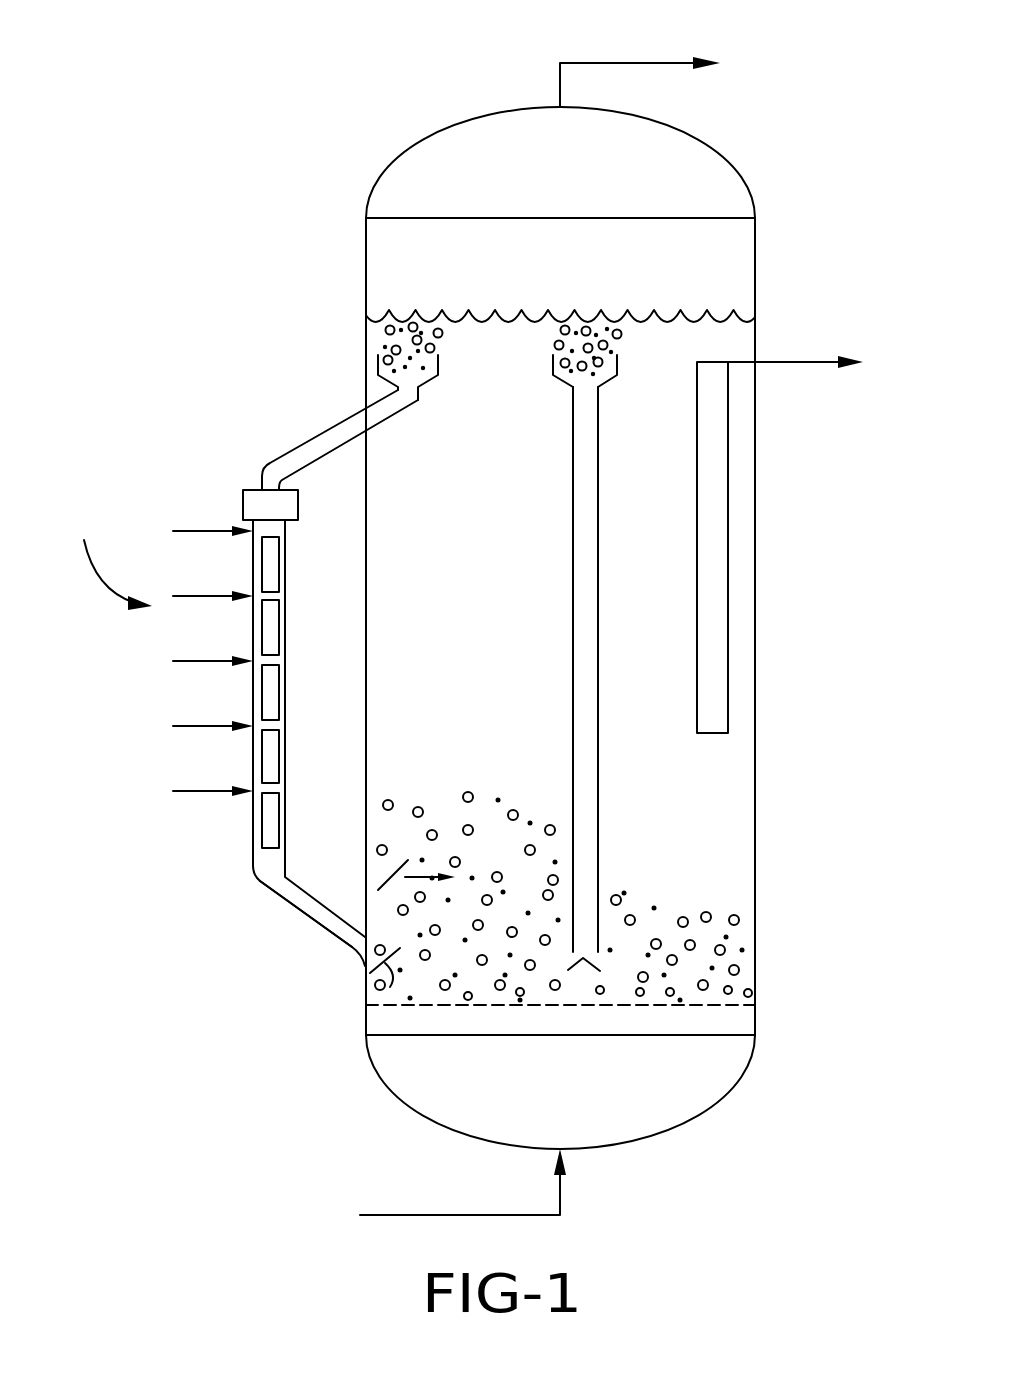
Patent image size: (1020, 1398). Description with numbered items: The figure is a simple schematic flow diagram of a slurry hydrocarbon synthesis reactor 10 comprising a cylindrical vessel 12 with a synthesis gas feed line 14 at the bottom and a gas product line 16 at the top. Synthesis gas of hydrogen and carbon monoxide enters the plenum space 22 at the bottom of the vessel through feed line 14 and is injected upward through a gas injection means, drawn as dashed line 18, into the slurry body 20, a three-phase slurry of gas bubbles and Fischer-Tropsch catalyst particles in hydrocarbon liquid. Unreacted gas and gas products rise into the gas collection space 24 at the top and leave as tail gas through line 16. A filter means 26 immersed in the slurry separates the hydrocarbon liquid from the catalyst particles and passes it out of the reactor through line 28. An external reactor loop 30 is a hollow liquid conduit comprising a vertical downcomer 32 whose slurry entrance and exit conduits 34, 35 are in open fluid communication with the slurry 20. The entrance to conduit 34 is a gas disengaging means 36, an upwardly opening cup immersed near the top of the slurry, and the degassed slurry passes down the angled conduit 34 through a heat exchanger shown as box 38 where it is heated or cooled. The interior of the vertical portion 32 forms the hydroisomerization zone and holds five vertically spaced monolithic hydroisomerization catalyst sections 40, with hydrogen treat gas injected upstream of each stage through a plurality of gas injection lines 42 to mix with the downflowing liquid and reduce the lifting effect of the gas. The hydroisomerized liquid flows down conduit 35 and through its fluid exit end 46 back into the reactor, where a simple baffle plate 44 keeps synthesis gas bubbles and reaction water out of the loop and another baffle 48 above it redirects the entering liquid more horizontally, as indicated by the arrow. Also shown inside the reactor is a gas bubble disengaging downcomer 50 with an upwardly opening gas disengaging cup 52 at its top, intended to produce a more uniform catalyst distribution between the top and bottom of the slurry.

The slurry hydrocarbon synthesis reactor 10 is at (288, 100).
The cylindrical vessel 12 is at (755, 275).
The synthesis gas feed line 14 is at (483, 1215).
The gas product line 16 is at (612, 63).
The gas injection means 18 is at (723, 1005).
The slurry body 20 is at (720, 798).
The plenum space 22 is at (535, 1107).
The gas collection space 24 is at (535, 181).
The filter means 26 is at (730, 653).
The liquid product line 28 is at (795, 365).
The external reactor loop 30 is at (109, 562).
The vertical downcomer 32 is at (253, 853).
The slurry entrance conduit 34 is at (318, 430).
The slurry exit conduit 35 is at (290, 910).
The gas disengaging means 36 is at (440, 358).
The heat exchanger 38 is at (246, 500).
The monolithic hydroisomerization catalyst sections 40 is at (275, 552).
The gas injection lines 42 is at (208, 529).
The baffle plate 44 is at (390, 987).
The fluid exit end 46 is at (362, 950).
The baffle 48 is at (390, 884).
The gas bubble disengaging downcomer 50 is at (573, 582).
The gas disengaging cup 52 is at (620, 360).